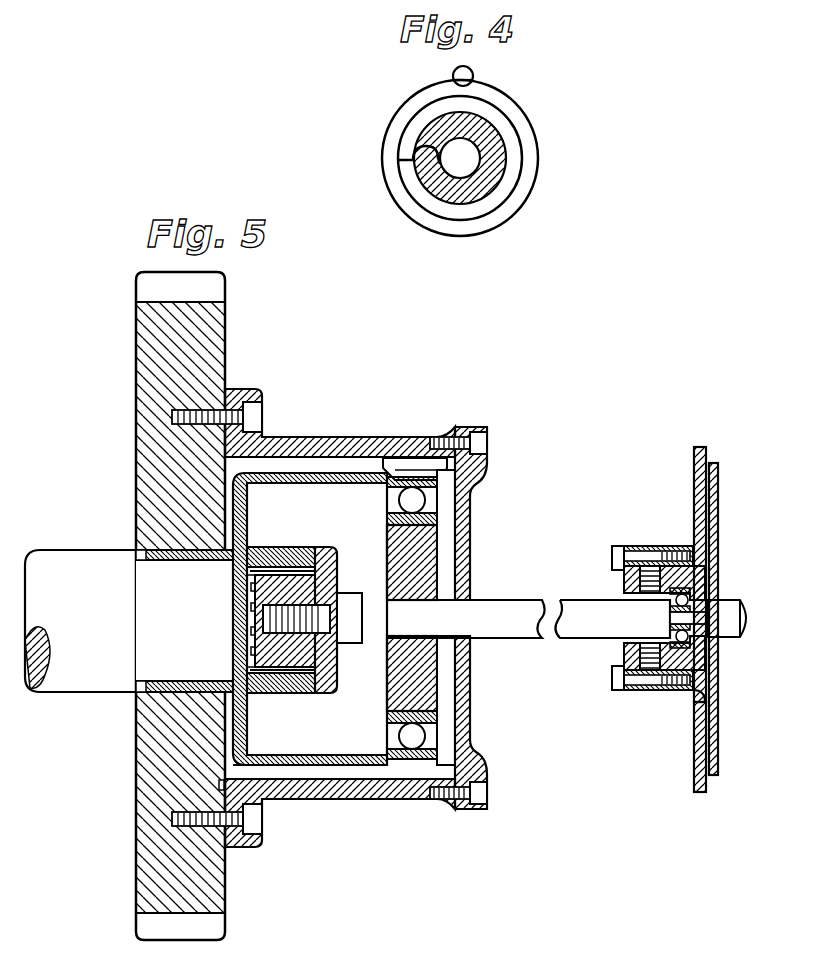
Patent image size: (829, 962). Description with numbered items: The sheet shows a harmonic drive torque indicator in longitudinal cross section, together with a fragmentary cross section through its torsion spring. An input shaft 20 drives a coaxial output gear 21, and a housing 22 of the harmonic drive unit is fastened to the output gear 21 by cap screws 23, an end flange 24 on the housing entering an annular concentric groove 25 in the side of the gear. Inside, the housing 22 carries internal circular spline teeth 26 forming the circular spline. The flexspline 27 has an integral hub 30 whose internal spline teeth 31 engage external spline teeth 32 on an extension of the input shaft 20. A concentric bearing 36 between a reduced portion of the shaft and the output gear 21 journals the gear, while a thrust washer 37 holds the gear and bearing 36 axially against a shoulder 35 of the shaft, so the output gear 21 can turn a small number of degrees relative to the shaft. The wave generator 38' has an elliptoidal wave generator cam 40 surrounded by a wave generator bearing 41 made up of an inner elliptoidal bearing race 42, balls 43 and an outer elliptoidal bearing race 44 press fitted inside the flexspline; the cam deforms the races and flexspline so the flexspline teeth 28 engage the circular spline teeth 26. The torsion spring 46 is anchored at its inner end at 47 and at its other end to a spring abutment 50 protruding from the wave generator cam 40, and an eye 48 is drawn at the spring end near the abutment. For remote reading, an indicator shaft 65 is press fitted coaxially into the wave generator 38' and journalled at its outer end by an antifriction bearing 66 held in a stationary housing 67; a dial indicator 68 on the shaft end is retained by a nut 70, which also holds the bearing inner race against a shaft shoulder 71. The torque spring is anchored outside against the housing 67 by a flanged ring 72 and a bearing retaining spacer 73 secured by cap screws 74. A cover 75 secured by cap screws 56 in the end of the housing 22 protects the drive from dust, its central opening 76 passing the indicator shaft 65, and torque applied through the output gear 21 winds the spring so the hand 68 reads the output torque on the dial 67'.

In FIG. 5, the input shaft 20 is at (98, 633).
In FIG. 5, the output gear 21 is at (210, 287).
In FIG. 5, the housing 22 is at (336, 437).
In FIG. 5, the cap screws 23 is at (262, 822).
In FIG. 5, the end flange 24 is at (242, 780).
In FIG. 5, the annular concentric groove 25 is at (218, 788).
In FIG. 5, the internal circular spline teeth 26 is at (412, 460).
In FIG. 5, the flexspline 27 is at (331, 484).
In FIG. 5, the flexspline teeth 28 is at (391, 481).
In FIG. 5, the hub 30 is at (285, 693).
In FIG. 5, the internal spline teeth 31 is at (278, 567).
In FIG. 5, the external spline teeth 32 is at (245, 582).
In FIG. 5, the shoulder 35 is at (136, 556).
In FIG. 5, the bearing 36 is at (172, 565).
In FIG. 5, the thrust washer 37 is at (238, 678).
In FIG. 5, the wave generator 38' is at (388, 618).
In FIG. 5, the wave generator cam 40 is at (437, 693).
In FIG. 5, the wave generator bearing 41 is at (381, 745).
In FIG. 5, the inner elliptoidal bearing race 42 is at (389, 718).
In FIG. 5, the balls 43 is at (425, 740).
In FIG. 5, the outer elliptoidal bearing race 44 is at (395, 758).
In FIG. 4, the torsion spring 46 is at (537, 141).
In FIG. 5, the torsion spring 46 is at (650, 590).
In FIG. 4, the spring anchor 47 is at (437, 180).
In FIG. 4, the spring eye 48 is at (454, 78).
In FIG. 4, the spring abutment 50 is at (470, 76).
In FIG. 5, the cap screws 56 is at (489, 444).
In FIG. 5, the indicator shaft 65 is at (524, 600).
In FIG. 5, the antifriction bearing 66 is at (673, 602).
In FIG. 5, the housing 67 is at (679, 646).
In FIG. 5, the dial 67' is at (669, 754).
In FIG. 5, the dial indicator 68 is at (718, 508).
In FIG. 5, the nut 70 is at (721, 606).
In FIG. 5, the shaft shoulder 71 is at (673, 621).
In FIG. 5, the flanged ring 72 is at (631, 546).
In FIG. 5, the bearing retaining spacer 73 is at (664, 548).
In FIG. 5, the cap screws 74 is at (612, 684).
In FIG. 5, the cover 75 is at (466, 546).
In FIG. 5, the central opening 76 is at (468, 598).